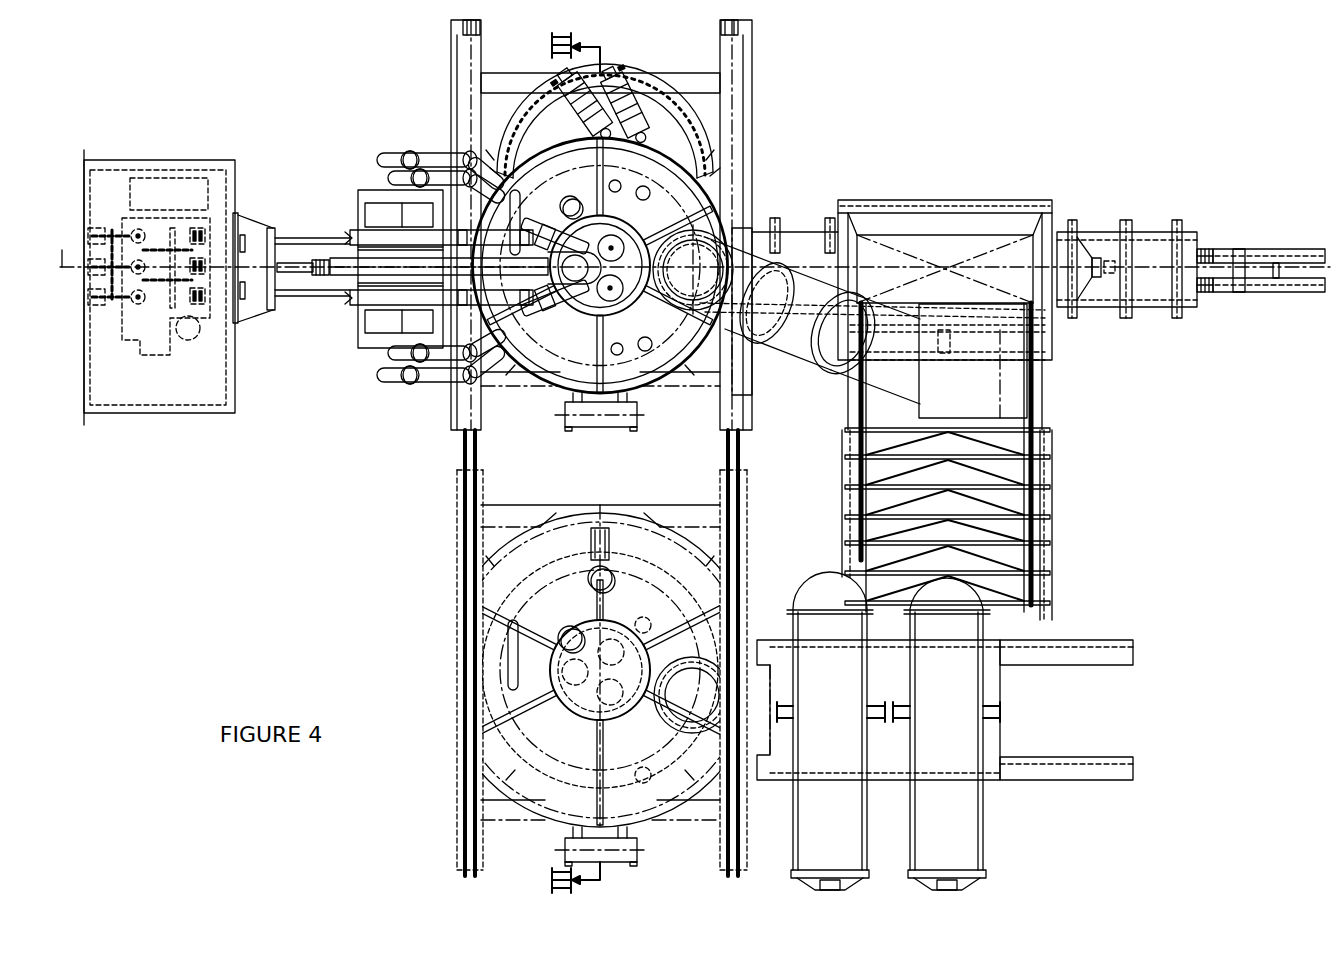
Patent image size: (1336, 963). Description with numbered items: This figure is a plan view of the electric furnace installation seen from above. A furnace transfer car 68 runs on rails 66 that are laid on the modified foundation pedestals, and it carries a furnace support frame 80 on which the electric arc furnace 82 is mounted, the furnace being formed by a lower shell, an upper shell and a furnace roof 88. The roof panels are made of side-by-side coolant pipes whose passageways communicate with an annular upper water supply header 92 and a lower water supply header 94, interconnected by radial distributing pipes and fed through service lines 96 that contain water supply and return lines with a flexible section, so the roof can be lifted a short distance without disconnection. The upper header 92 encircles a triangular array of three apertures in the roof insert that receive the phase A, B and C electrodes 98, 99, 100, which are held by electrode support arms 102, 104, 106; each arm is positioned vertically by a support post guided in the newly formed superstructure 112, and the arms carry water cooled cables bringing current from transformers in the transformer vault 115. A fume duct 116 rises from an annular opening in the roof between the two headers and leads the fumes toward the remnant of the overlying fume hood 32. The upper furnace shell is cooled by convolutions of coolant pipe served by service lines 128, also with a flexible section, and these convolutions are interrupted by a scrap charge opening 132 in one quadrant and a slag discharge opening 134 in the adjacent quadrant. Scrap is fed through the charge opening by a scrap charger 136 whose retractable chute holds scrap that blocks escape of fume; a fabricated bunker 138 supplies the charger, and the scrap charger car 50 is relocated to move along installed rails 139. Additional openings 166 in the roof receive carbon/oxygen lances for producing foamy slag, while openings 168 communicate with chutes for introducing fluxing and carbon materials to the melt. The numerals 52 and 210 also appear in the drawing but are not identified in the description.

The overlying fume hood 32 is at (802, 358).
The scrap charger car 50 is at (1000, 745).
The cylinders 52 is at (817, 730).
The rails 66 is at (745, 457).
The furnace transfer car 68 is at (745, 107).
The furnace support frame 80 is at (662, 85).
The electric arc furnace 82 is at (705, 180).
The furnace roof 88 is at (569, 392).
The upper water supply header 92 is at (597, 222).
The lower water supply header 94 is at (660, 152).
The service lines 96 is at (427, 153).
The phase A electrode 98 is at (617, 296).
The phase B electrode 99 is at (588, 300).
The phase C electrode 100 is at (617, 250).
The electrode support arm 102 is at (558, 320).
The electrode support arm 104 is at (520, 365).
The electrode support arm 106 is at (555, 217).
The superstructure 112 is at (356, 217).
The transformer vault 115 is at (180, 163).
The fume duct 116 is at (700, 252).
The service lines 128 is at (382, 178).
The scrap charge opening 132 is at (745, 238).
The slag discharge opening 134 is at (592, 403).
The scrap charger 136 is at (1058, 238).
The bunker 138 is at (985, 200).
The installed rails 139 is at (1110, 652).
The openings 166 is at (616, 181).
The openings 168 is at (650, 193).
The cartridge 210 is at (567, 196).